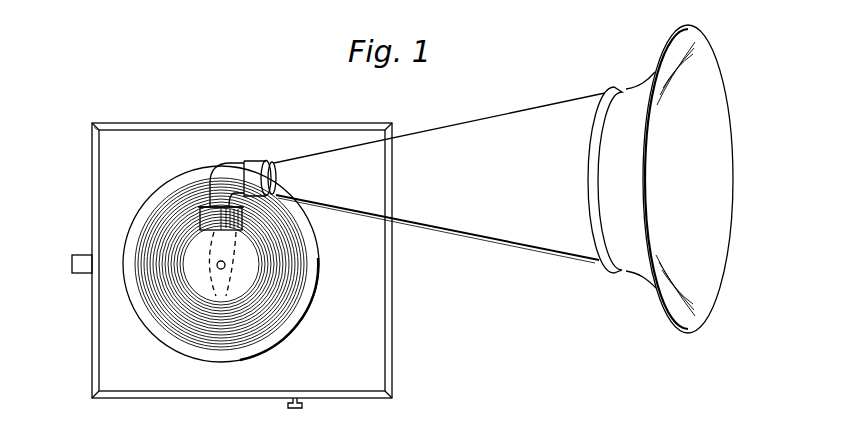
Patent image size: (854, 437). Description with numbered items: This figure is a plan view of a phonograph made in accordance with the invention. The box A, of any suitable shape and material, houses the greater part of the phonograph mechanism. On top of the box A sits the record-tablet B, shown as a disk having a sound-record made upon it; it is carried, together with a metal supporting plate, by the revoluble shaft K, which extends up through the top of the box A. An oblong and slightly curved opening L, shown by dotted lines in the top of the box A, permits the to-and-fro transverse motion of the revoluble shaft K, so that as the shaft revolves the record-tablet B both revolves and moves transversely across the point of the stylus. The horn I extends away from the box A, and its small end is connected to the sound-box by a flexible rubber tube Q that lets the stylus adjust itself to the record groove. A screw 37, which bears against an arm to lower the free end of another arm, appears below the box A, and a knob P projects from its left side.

The box A is at (392, 322).
The record-tablet B is at (317, 290).
The revoluble shaft K is at (225, 264).
The opening L is at (213, 264).
The knob P is at (72, 268).
The rubber tube Q is at (262, 165).
The horn I is at (485, 118).
The screw 37 is at (302, 406).